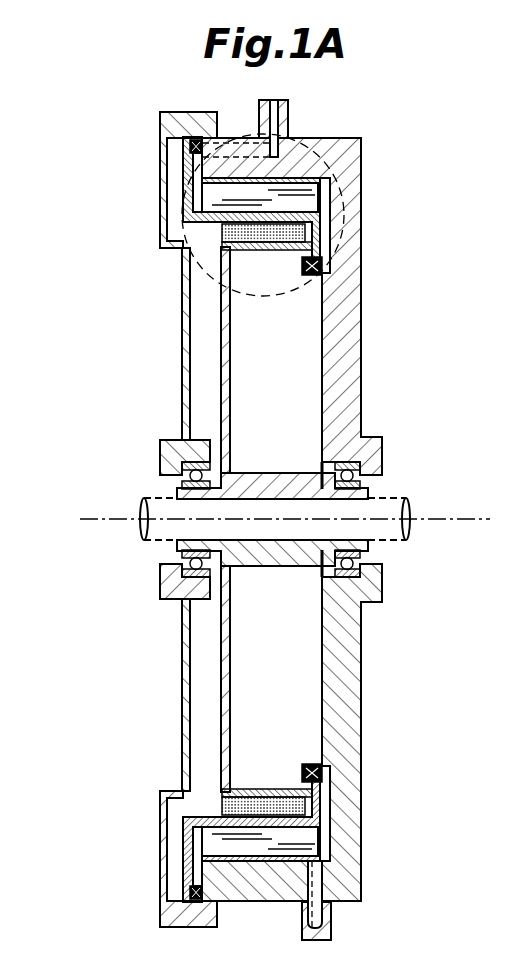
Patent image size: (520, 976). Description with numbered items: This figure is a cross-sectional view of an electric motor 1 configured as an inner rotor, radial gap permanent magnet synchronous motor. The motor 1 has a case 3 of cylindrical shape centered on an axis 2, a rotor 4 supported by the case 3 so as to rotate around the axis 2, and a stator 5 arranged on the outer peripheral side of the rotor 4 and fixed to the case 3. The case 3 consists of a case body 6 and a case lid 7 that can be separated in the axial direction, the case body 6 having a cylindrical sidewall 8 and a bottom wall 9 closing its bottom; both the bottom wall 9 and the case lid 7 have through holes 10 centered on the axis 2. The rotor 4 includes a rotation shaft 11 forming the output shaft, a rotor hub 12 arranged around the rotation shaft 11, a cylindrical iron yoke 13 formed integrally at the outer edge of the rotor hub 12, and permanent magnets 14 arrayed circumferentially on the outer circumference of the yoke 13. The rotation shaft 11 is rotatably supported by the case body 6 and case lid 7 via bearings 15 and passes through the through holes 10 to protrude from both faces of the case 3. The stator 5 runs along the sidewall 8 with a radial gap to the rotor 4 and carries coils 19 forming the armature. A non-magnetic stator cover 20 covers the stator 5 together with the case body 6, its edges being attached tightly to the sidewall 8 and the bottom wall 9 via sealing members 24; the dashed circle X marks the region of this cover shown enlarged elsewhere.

The electric motor 1 is at (422, 134).
The axis 2 is at (447, 520).
The case 3 is at (370, 330).
The rotor 4 is at (213, 302).
The stator 5 is at (326, 205).
The case body 6 is at (353, 395).
The case lid 7 is at (184, 350).
The sidewall 8 is at (318, 139).
The bottom wall 9 is at (351, 293).
The through holes 10 is at (177, 560).
The rotation shaft 11 is at (398, 497).
The rotor hub 12 is at (230, 368).
The yoke 13 is at (250, 247).
The permanent magnets 14 is at (286, 243).
The bearings 15 is at (180, 485).
The coils 19 is at (313, 197).
The stator cover 20 is at (186, 173).
The sealing member 24 is at (190, 145).
The detail region X is at (190, 267).